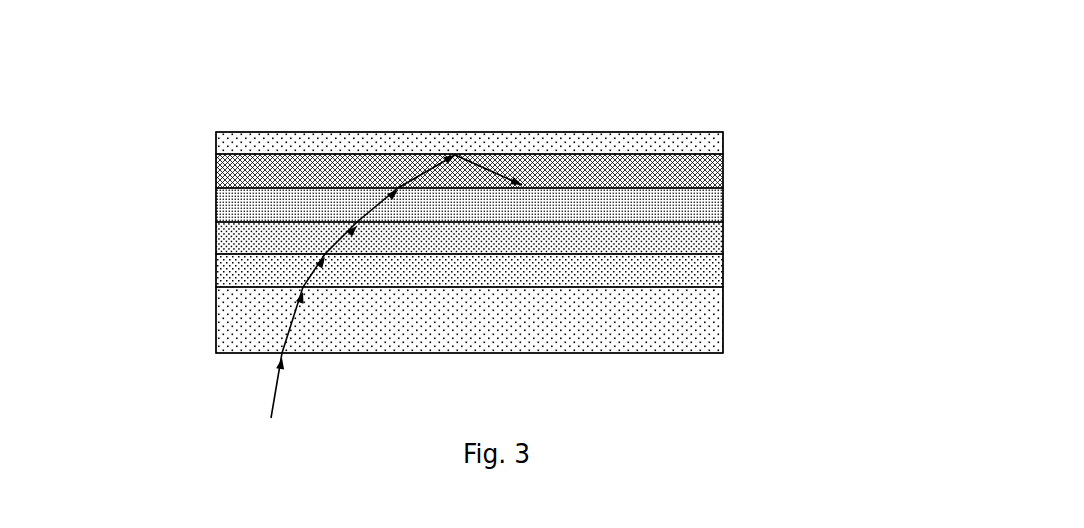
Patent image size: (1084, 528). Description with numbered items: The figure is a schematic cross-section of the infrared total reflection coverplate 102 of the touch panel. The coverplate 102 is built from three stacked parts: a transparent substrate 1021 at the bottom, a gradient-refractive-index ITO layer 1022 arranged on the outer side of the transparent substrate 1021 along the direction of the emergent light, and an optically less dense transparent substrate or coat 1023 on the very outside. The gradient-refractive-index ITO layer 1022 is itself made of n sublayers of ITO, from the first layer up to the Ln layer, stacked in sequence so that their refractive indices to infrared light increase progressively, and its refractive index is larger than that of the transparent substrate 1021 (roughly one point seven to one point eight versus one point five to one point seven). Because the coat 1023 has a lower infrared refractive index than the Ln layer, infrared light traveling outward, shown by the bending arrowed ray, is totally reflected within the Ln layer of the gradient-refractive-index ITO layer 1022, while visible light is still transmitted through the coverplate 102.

The infrared total reflection coverplate 102 is at (497, 232).
The transparent substrate 1021 is at (240, 309).
The gradient-refractive-index ITO layer 1022 is at (172, 155).
The optically less dense transparent substrate or coat 1023 is at (240, 143).